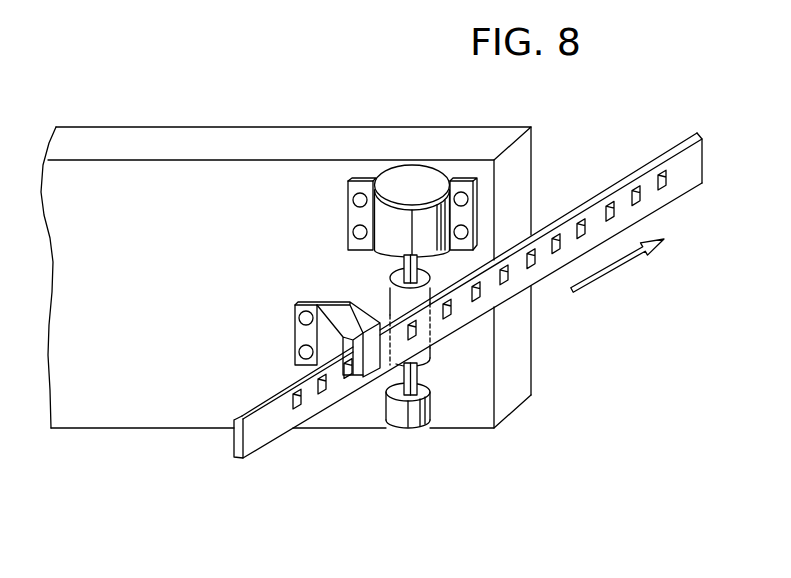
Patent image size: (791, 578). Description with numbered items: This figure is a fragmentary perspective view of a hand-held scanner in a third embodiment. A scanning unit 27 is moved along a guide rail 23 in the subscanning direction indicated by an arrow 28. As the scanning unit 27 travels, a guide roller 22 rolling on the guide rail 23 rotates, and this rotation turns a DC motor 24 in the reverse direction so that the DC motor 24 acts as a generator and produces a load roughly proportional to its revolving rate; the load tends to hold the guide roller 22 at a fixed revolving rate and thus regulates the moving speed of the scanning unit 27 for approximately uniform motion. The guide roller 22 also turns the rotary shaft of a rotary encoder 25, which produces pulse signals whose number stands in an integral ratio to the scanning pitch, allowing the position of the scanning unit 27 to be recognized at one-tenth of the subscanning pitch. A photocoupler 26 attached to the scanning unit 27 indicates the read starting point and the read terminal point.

The guide roller 22 is at (393, 305).
The guide rail 23 is at (263, 433).
The DC motor 24 is at (405, 183).
The rotary encoder 25 is at (422, 427).
The photocoupler 26 is at (370, 365).
The scanning unit 27 is at (208, 263).
The arrow 28 is at (615, 272).